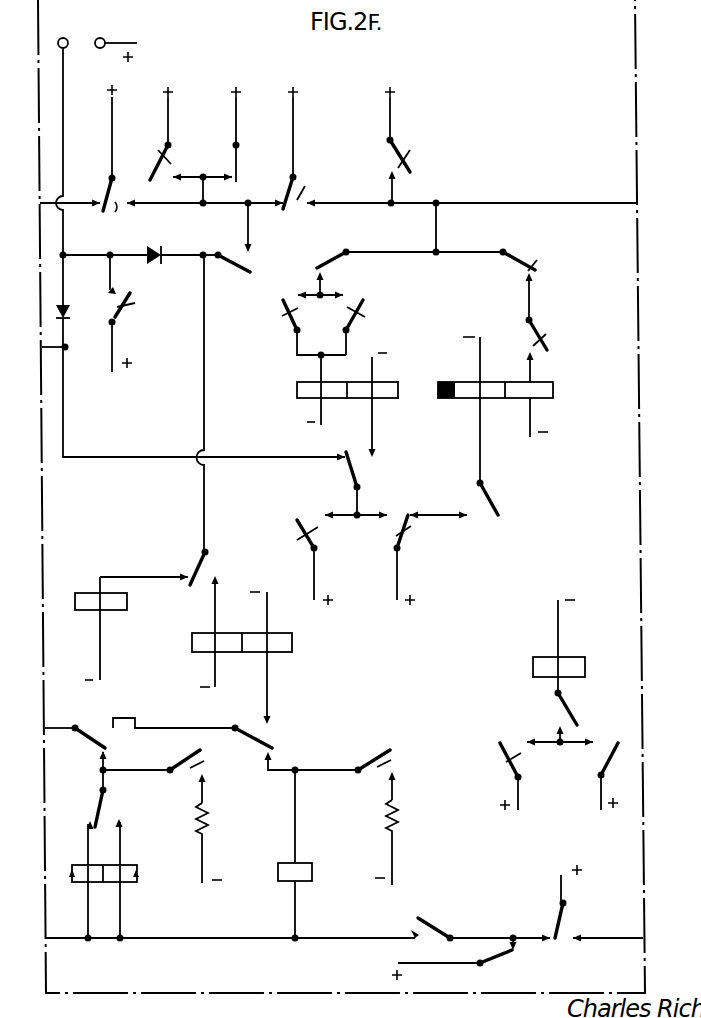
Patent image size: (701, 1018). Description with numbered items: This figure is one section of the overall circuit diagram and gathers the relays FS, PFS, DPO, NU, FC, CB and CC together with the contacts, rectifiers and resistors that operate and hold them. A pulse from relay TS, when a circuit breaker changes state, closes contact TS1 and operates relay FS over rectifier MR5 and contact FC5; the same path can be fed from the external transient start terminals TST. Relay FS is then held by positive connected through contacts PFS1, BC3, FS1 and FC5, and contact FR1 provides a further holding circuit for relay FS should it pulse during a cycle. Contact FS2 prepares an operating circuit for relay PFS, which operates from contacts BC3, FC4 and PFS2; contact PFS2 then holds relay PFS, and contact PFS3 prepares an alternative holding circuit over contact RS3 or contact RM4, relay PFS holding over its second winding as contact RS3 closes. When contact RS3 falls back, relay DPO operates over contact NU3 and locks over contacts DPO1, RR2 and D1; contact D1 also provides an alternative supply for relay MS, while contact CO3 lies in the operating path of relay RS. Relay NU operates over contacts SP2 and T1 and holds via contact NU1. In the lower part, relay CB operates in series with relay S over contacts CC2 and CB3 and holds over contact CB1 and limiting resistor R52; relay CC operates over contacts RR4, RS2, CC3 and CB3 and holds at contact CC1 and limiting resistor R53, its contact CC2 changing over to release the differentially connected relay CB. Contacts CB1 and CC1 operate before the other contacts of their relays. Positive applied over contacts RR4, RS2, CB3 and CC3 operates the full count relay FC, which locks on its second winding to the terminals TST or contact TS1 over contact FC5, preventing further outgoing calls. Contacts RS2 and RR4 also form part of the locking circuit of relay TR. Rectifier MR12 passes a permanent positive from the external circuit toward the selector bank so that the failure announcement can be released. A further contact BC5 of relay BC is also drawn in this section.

The external transient start terminals TST is at (85, 31).
The contact of relay CO CO3 is at (92, 161).
The contact of relay FR FR1 is at (173, 145).
The contact of relay PFS PFS1 is at (240, 176).
The contact of relay BC BC3 is at (320, 148).
The contact of relay D D1 is at (411, 145).
The rectifier MR5 is at (159, 252).
The contact of relay FS FS1 is at (244, 253).
The contact of relay FC FC4 is at (330, 252).
The contact of relay RR RR2 is at (533, 256).
The contact of relay TS TS1 is at (143, 313).
The rectifier MR12 is at (68, 320).
The contact of relay FS FS2 is at (285, 327).
The contact of relay PFS PFS2 is at (385, 325).
The contact of relay DPO DPO1 is at (571, 351).
The relay PFS is at (300, 390).
The relay DPO is at (546, 391).
The contact of relay PFS PFS3 is at (359, 470).
The contact of relay RM RM4 is at (281, 562).
The contact of relay RS RS3 is at (426, 560).
The contact of relay NU NU3 is at (482, 514).
The contact of relay FC FC5 is at (196, 563).
The relay FS is at (118, 604).
The full count relay FC is at (287, 643).
The relay NU is at (578, 667).
The contact of relay SP SP2 is at (578, 711).
The contact of relay T T1 is at (526, 776).
The contact of relay NU NU1 is at (607, 757).
The contact of relay CB CB3 is at (120, 713).
The contact of relay CC CC3 is at (270, 733).
The contact of relay CB CB1 is at (211, 776).
The contact of relay CC CC1 is at (400, 775).
The limiting resistor R52 is at (225, 822).
The limiting resistor R53 is at (413, 822).
The contact of relay CC CC2 is at (100, 823).
The relay CB is at (122, 877).
The relay CC is at (308, 873).
The contact of relay RS RS2 is at (445, 925).
The contact of relay RR RR4 is at (560, 932).
The BC relay contact 5 BC5 is at (495, 962).